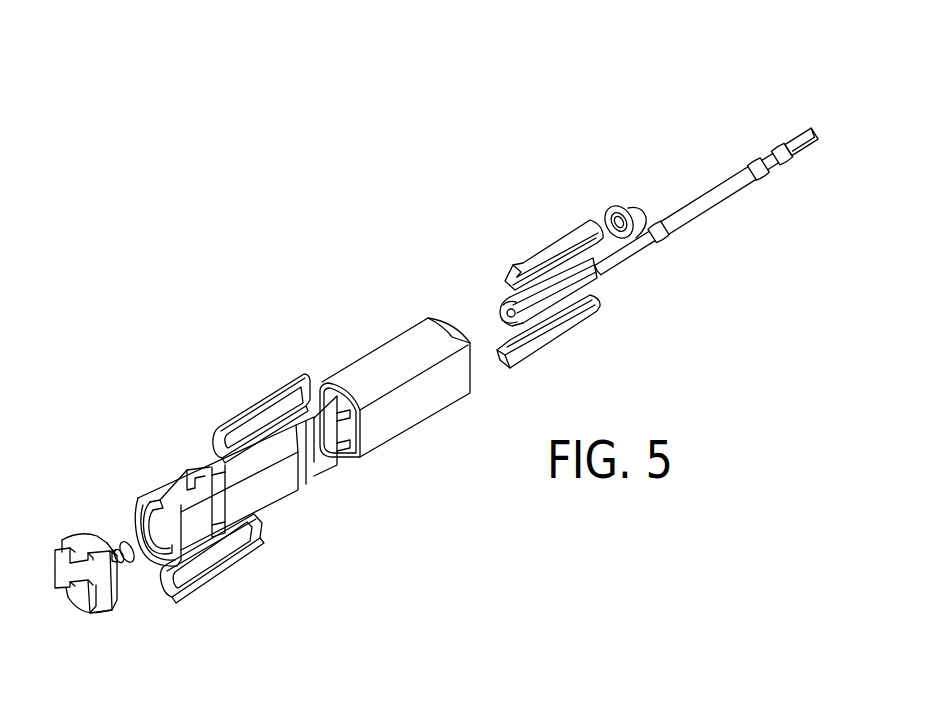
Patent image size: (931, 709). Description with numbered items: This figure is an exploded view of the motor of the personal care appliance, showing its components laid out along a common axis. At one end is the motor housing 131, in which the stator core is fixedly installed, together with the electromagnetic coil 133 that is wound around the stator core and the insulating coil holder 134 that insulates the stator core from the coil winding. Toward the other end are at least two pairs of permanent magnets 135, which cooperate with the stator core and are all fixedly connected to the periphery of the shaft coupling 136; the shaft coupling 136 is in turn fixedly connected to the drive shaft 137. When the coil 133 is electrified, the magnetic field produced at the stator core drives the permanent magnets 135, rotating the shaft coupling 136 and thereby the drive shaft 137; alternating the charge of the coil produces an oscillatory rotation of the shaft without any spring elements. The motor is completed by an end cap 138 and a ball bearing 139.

The motor housing 131 is at (380, 358).
The electromagnetic coil 133 is at (230, 412).
The insulating coil holder 134 is at (321, 387).
The permanent magnets 135 is at (516, 278).
The shaft coupling 136 is at (553, 295).
The drive shaft 137 is at (722, 192).
The end cap 138 is at (82, 533).
The ball bearing 139 is at (628, 203).